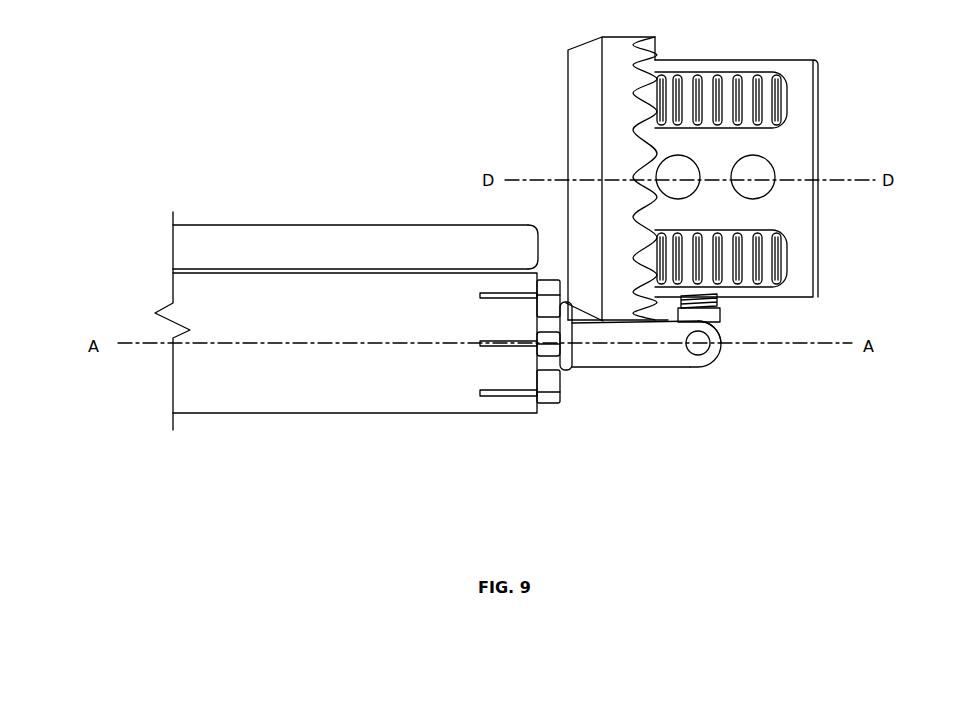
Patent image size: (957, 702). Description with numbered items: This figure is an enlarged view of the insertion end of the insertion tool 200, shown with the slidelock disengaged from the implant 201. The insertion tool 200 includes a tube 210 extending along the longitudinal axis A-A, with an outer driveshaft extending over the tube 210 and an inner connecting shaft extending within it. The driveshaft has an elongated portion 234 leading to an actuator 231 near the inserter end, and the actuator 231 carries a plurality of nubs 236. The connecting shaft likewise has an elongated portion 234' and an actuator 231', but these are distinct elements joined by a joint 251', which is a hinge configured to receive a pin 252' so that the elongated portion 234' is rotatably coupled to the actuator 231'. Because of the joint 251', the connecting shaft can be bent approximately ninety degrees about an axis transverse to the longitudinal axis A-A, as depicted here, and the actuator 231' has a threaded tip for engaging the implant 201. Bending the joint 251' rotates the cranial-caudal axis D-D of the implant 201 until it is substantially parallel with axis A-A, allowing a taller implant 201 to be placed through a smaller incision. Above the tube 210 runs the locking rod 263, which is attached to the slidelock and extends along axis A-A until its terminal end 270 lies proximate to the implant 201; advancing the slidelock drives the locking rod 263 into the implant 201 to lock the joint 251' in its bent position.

The insertion tool 200 is at (336, 116).
The implant 201 is at (800, 82).
The locking rod 263 is at (268, 236).
The terminal end 270 is at (541, 238).
The elongated portion 234 is at (355, 377).
The actuator 231 is at (488, 389).
The nubs 236 is at (551, 400).
The tube 210 is at (565, 372).
The elongated portion 234' is at (631, 404).
The joint 251' is at (769, 364).
The pin 252' is at (727, 386).
The actuator 231' is at (796, 308).